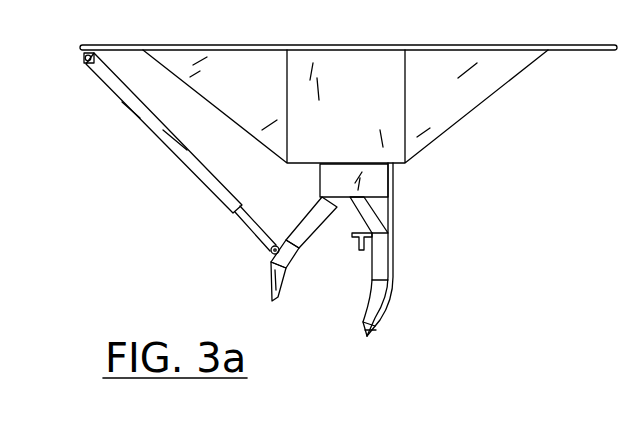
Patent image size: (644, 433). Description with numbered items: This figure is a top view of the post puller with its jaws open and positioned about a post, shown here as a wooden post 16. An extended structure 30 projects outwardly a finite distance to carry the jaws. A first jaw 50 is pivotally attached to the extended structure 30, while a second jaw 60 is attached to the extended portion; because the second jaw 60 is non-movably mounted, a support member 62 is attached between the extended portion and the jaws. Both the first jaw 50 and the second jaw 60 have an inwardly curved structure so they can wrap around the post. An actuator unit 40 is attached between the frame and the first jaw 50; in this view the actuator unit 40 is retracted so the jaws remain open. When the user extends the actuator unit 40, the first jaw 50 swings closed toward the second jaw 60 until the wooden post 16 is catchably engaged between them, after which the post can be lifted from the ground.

The actuator unit 40 is at (185, 164).
The first jaw 50 is at (274, 284).
The extended structure 30 is at (375, 187).
The support member 62 is at (393, 250).
The second jaw 60 is at (369, 339).
The wooden post 16 is at (356, 250).